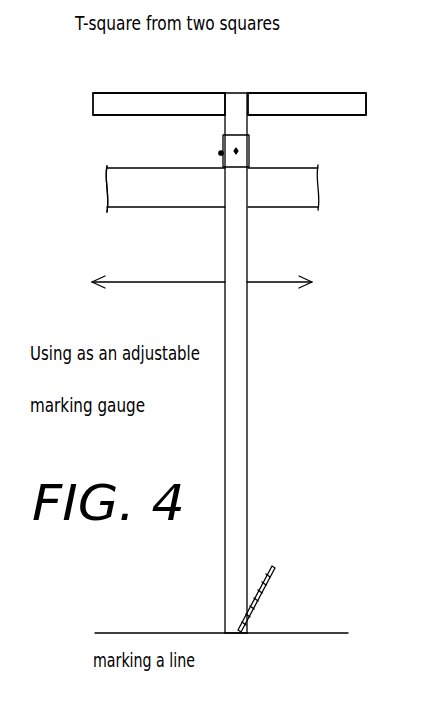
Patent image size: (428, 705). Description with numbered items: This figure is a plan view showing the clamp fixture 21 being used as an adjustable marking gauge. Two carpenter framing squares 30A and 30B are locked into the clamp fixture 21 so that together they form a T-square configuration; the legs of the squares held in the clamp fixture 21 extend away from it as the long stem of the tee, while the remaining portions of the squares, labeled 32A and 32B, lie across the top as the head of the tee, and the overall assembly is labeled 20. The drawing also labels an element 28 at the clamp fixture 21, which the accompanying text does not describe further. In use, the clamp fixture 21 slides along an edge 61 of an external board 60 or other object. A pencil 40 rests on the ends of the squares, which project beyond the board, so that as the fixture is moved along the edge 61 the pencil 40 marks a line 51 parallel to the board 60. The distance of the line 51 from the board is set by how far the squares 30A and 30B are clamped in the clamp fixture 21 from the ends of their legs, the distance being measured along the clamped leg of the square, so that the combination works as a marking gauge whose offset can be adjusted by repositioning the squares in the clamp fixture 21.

The T-square assembly 20 is at (72, 107).
The carpenter framing square 30A is at (103, 84).
The carpenter framing square 30B is at (363, 84).
The first head arm 32A is at (127, 103).
The second head arm 32B is at (337, 107).
The clamp fixture 21 is at (249, 135).
The fastener 28 is at (221, 153).
The external board 60 is at (153, 209).
The edge of the external board 61 is at (125, 163).
The pencil 40 is at (265, 587).
The line 51 is at (297, 633).